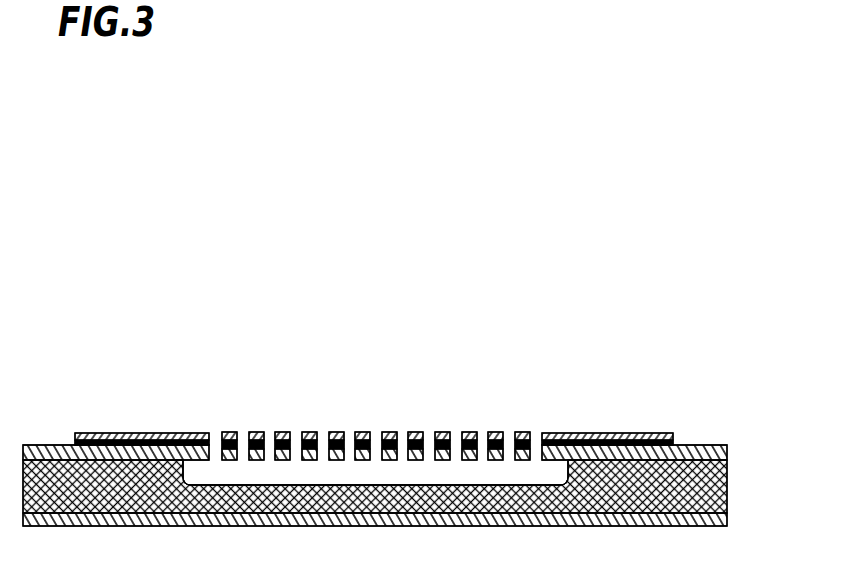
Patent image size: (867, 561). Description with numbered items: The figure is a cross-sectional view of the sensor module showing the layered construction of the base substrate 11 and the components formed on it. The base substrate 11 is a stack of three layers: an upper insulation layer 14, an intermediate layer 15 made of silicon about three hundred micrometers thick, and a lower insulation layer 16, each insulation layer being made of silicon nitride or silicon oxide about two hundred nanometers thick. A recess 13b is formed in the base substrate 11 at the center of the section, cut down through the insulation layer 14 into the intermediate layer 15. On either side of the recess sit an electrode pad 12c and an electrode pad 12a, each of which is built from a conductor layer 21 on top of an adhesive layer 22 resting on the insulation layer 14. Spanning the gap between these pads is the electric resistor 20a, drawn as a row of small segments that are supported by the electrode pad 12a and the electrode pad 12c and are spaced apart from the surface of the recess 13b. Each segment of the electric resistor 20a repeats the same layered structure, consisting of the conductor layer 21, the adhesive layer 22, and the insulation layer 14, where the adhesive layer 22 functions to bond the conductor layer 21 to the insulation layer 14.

The base substrate 11 is at (782, 512).
The electrode pad 12a is at (697, 360).
The electrode pad 12c is at (133, 360).
The recess 13b is at (481, 485).
The insulation layer 14 is at (727, 445).
The intermediate layer 15 is at (727, 482).
The insulation layer 16 is at (727, 519).
The electric resistor 20a is at (315, 360).
The conductor layer 21 is at (106, 433).
The adhesive layer 22 is at (70, 440).